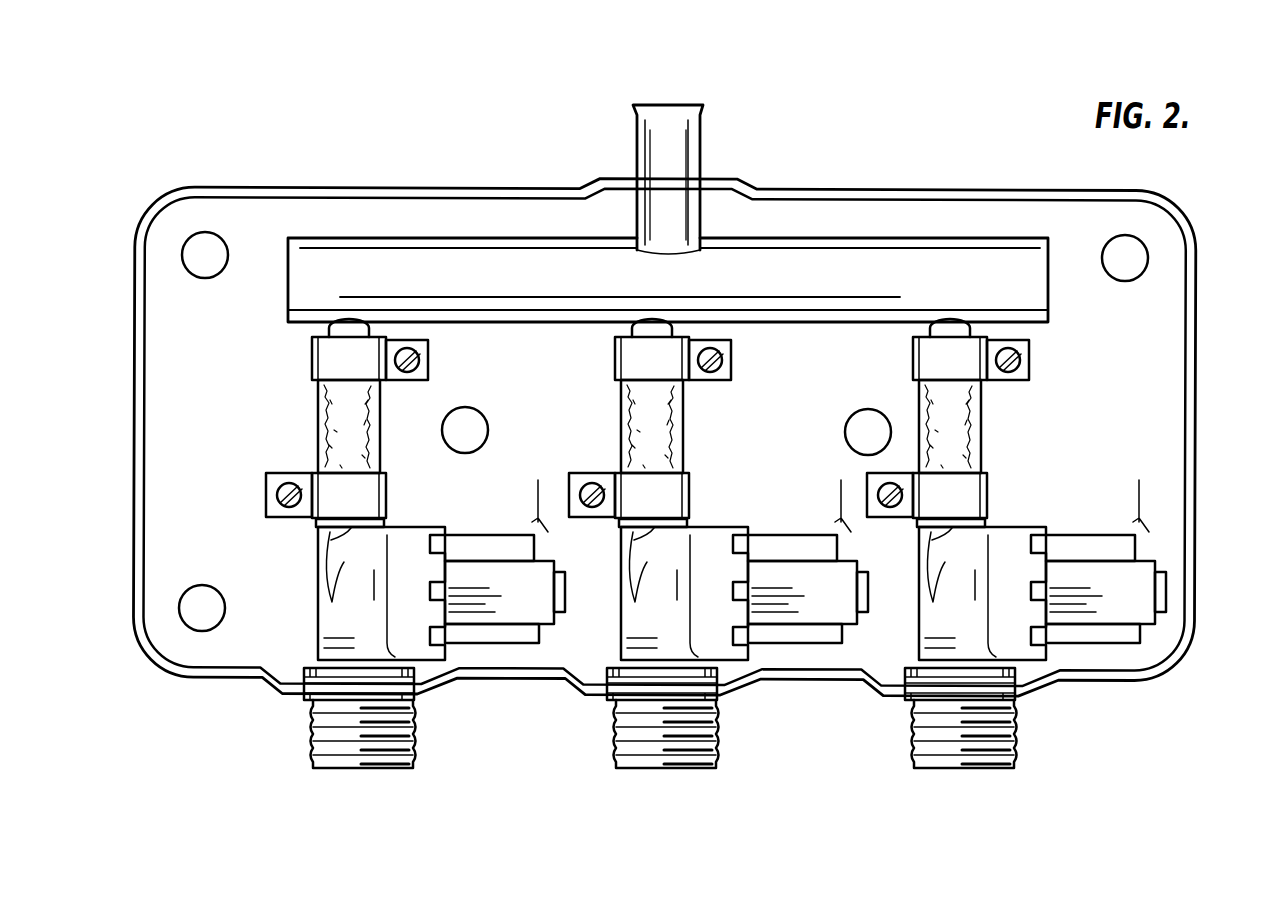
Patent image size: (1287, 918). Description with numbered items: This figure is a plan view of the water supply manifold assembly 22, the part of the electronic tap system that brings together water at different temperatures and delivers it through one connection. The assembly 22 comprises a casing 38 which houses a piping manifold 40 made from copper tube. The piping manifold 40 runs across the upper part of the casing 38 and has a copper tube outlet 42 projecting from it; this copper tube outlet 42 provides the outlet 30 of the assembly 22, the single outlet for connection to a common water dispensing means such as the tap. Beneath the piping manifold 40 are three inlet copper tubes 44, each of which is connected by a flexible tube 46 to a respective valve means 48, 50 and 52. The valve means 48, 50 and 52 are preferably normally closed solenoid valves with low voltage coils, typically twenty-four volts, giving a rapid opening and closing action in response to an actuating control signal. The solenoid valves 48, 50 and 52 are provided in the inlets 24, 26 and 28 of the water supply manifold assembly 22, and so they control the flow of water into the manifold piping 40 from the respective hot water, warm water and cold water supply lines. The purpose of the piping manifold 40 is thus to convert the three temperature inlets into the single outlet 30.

The water supply manifold assembly 22 is at (293, 184).
The inlet 24 is at (340, 745).
The inlet 26 is at (650, 748).
The inlet 28 is at (1010, 757).
The outlet 30 is at (703, 107).
The casing 38 is at (932, 190).
The piping manifold 40 is at (450, 272).
The copper tube outlet 42 is at (657, 218).
The inlet copper tubes 44 is at (312, 326).
The flexible tubes 46 is at (340, 415).
The valve means 48 is at (410, 590).
The valve means 50 is at (718, 587).
The valve means 52 is at (1025, 583).